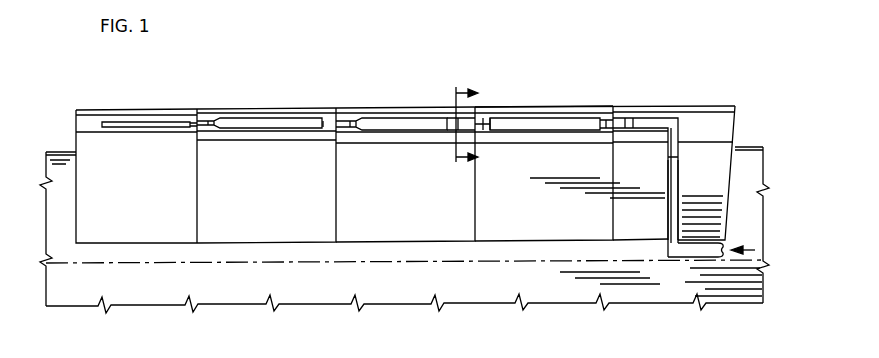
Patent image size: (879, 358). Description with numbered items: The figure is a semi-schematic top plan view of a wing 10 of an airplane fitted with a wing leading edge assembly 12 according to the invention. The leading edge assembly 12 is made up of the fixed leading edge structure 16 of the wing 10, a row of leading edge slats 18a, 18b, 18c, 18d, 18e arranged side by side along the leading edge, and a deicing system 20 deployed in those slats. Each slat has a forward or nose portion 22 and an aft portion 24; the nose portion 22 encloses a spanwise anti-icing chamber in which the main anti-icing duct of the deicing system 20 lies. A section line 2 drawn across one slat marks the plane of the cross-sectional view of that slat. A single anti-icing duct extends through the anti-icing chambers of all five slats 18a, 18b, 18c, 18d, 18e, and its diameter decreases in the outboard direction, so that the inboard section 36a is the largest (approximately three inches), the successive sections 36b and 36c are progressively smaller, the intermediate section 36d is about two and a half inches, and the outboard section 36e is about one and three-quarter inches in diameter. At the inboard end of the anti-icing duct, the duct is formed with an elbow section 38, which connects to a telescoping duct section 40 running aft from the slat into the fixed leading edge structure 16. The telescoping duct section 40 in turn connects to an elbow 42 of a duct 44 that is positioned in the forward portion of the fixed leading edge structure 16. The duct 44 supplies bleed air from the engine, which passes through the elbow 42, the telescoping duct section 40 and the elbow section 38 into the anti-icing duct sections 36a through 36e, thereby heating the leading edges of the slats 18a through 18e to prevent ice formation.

The section line 2 is at (459, 124).
The wing 10 is at (484, 84).
The wing leading edge assembly 12 is at (551, 101).
The fixed leading edge structure 16 is at (70, 150).
The leading edge slat 18a is at (686, 104).
The leading edge slat 18b is at (579, 103).
The leading edge slat 18c is at (376, 106).
The leading edge slat 18d is at (238, 108).
The leading edge slat 18e is at (143, 108).
The deicing system 20 is at (447, 106).
The nose portion 22 is at (495, 101).
The aft portion 24 is at (576, 242).
The inboard section of anti-icing duct 36a is at (633, 120).
The section of anti-icing duct 36b is at (566, 118).
The section of anti-icing duct 36c is at (425, 118).
The intermediate section of anti-icing duct 36d is at (300, 118).
The outboard section of anti-icing duct 36e is at (133, 130).
The elbow section 38 is at (676, 130).
The telescoping duct section 40 is at (673, 188).
The elbow 42 is at (670, 252).
The duct 44 is at (703, 252).